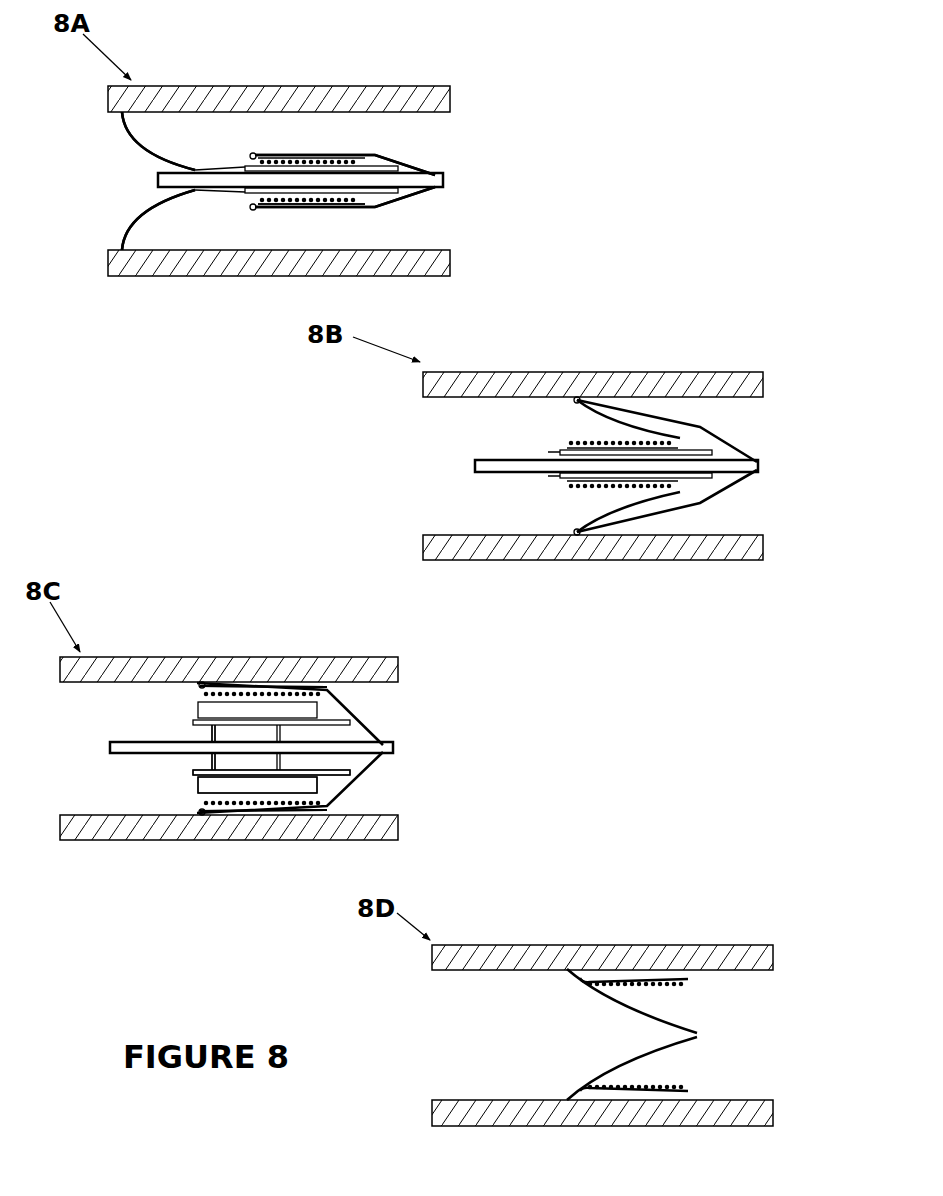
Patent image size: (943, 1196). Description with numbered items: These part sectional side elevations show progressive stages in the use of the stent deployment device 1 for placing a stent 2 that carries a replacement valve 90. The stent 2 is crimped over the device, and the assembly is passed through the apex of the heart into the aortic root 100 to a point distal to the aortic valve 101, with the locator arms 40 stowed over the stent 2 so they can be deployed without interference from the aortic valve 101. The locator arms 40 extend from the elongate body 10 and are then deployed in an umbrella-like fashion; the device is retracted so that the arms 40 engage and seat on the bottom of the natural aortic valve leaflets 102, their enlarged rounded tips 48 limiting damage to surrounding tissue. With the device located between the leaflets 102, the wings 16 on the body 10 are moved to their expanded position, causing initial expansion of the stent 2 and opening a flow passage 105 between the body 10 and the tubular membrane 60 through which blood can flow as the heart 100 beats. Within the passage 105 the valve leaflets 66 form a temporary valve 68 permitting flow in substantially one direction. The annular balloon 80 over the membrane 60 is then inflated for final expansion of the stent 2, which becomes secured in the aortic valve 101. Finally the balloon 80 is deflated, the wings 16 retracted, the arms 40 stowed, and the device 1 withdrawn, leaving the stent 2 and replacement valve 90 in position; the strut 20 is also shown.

In FIG. 8A, the stent deployment device 1 is at (388, 219).
In FIG. 8A, the stent 2 is at (277, 208).
In FIG. 8D, the stent 2 is at (633, 990).
In FIG. 8A, the elongate body 10 is at (427, 182).
In FIG. 8C, the elongate body 10 is at (120, 747).
In FIG. 8A, the elongate wings 16 is at (243, 190).
In FIG. 8C, the elongate wings 16 is at (333, 717).
In FIG. 8C, the strut 20 is at (213, 760).
In FIG. 8A, the locator arms 40 is at (410, 167).
In FIG. 8B, the locator arms 40 is at (730, 451).
In FIG. 8A, the tip of arm 48 is at (256, 153).
In FIG. 8B, the tip of arm 48 is at (577, 397).
In FIG. 8A, the tubular membrane 60 is at (158, 181).
In FIG. 8C, the tubular membrane 60 is at (200, 778).
In FIG. 8B, the valve leaflets 66 is at (757, 457).
In FIG. 8C, the valve leaflets 66 is at (312, 726).
In FIG. 8C, the temporary valve 68 is at (342, 762).
In FIG. 8A, the annular balloon 80 is at (246, 172).
In FIG. 8C, the annular balloon 80 is at (200, 708).
In FIG. 8A, the replacement valve 90 is at (323, 156).
In FIG. 8C, the replacement valve 90 is at (207, 797).
In FIG. 8D, the replacement valve 90 is at (670, 1043).
In FIG. 8A, the aortic root 100 is at (240, 97).
In FIG. 8B, the aortic root 100 is at (707, 378).
In FIG. 8C, the aortic root 100 is at (347, 667).
In FIG. 8D, the aortic root 100 is at (715, 958).
In FIG. 8A, the aortic valve 101 is at (180, 146).
In FIG. 8A, the natural aortic valve leaflets 102 is at (137, 222).
In FIG. 8B, the natural aortic valve leaflets 102 is at (580, 518).
In FIG. 8C, the natural aortic valve leaflets 102 is at (200, 812).
In FIG. 8D, the natural aortic valve leaflets 102 is at (633, 980).
In FIG. 8C, the flow passage 105 is at (198, 732).